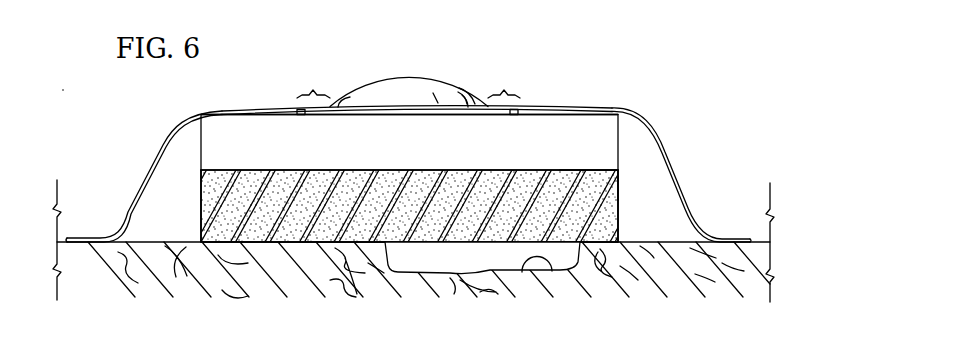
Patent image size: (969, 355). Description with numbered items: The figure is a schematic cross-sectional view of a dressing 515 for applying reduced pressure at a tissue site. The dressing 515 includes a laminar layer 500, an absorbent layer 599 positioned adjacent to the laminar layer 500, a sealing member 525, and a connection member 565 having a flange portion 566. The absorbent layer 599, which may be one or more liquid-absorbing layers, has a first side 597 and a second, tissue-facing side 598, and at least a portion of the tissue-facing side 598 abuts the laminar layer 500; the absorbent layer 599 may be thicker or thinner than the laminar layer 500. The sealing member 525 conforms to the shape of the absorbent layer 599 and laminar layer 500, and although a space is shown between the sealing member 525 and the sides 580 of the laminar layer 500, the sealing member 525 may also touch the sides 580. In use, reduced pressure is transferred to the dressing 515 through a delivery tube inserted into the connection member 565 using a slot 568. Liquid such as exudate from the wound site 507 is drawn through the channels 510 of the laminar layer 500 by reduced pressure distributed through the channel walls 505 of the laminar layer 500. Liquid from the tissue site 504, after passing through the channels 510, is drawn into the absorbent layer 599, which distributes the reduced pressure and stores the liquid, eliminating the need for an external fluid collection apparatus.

The laminar layer 500 is at (619, 223).
The tissue site 504 is at (430, 275).
The channel walls 505 is at (619, 186).
The wound site 507 is at (545, 271).
The channels 510 is at (592, 172).
The dressing 515 is at (606, 64).
The sealing member 525 is at (153, 163).
The connection member 565 is at (388, 78).
The flange portion 566 is at (408, 88).
The slot 568 is at (466, 98).
The sides 580 is at (200, 213).
The first side 597 is at (543, 107).
The second, tissue-facing side 598 is at (224, 174).
The absorbent layer 599 is at (424, 151).